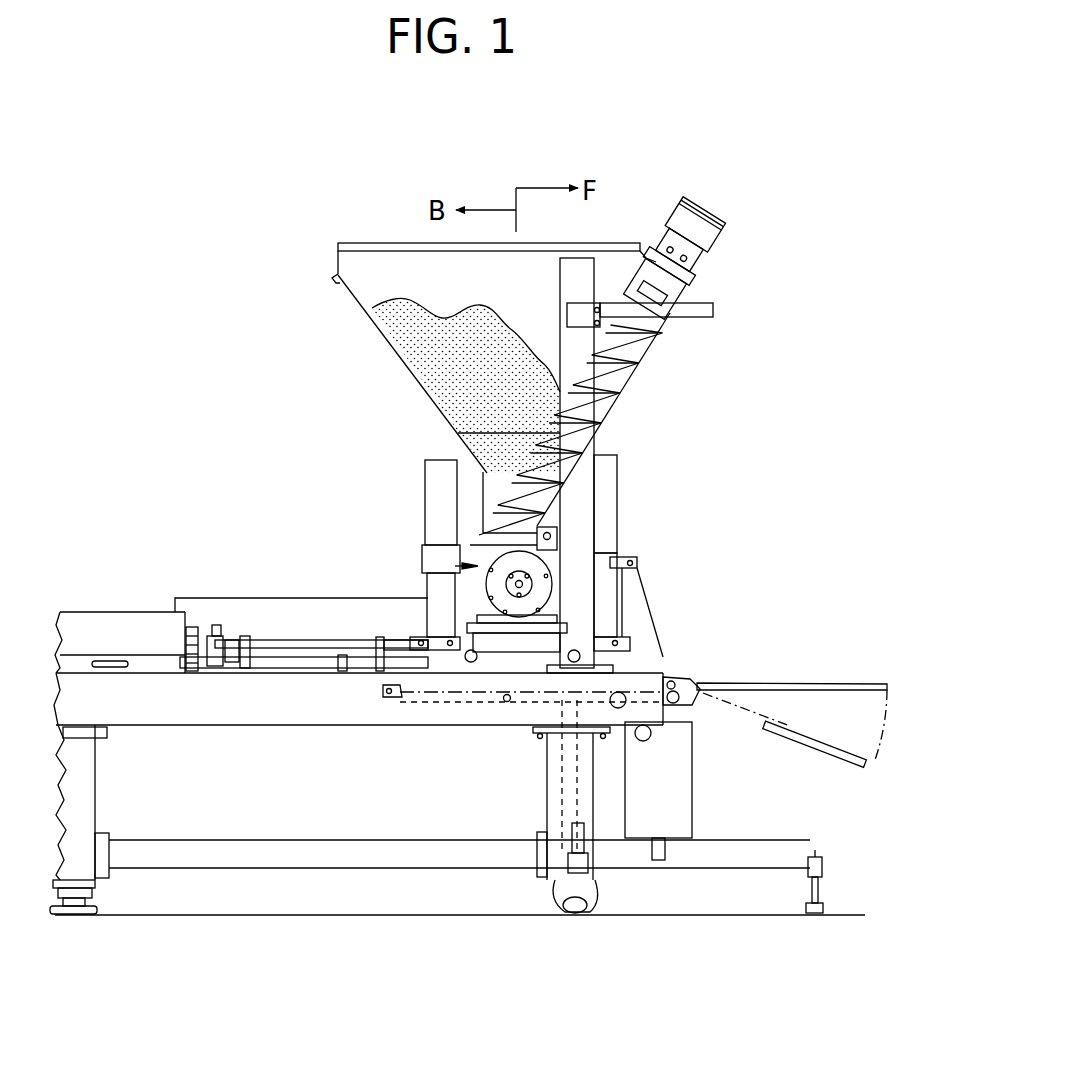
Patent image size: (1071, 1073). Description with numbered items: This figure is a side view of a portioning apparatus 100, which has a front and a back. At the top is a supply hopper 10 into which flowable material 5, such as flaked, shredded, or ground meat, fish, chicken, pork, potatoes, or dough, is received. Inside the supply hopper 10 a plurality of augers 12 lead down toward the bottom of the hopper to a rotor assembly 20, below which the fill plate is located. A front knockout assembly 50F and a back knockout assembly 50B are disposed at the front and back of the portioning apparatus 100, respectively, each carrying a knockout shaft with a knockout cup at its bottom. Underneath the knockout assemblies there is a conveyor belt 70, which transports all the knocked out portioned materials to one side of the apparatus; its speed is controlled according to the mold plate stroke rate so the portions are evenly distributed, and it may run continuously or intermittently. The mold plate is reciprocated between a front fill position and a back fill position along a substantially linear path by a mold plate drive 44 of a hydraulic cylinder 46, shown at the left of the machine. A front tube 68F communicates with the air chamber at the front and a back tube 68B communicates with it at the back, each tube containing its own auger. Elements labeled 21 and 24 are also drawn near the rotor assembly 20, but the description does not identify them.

The flowable material 5 is at (412, 318).
The supply hopper 10 is at (348, 266).
The augers 12 is at (632, 352).
The rotor assembly 20 is at (423, 559).
The shutter block 21 is at (552, 552).
The handwheel 24 is at (538, 585).
The mold plate drive 44 is at (306, 640).
The hydraulic cylinder 46 is at (128, 612).
The back knockout assembly 50B is at (433, 480).
The front knockout assembly 50F is at (612, 468).
The back tube 68B is at (468, 665).
The front tube 68F is at (574, 665).
The conveyor belt 70 is at (733, 680).
The portioning apparatus 100 is at (728, 266).